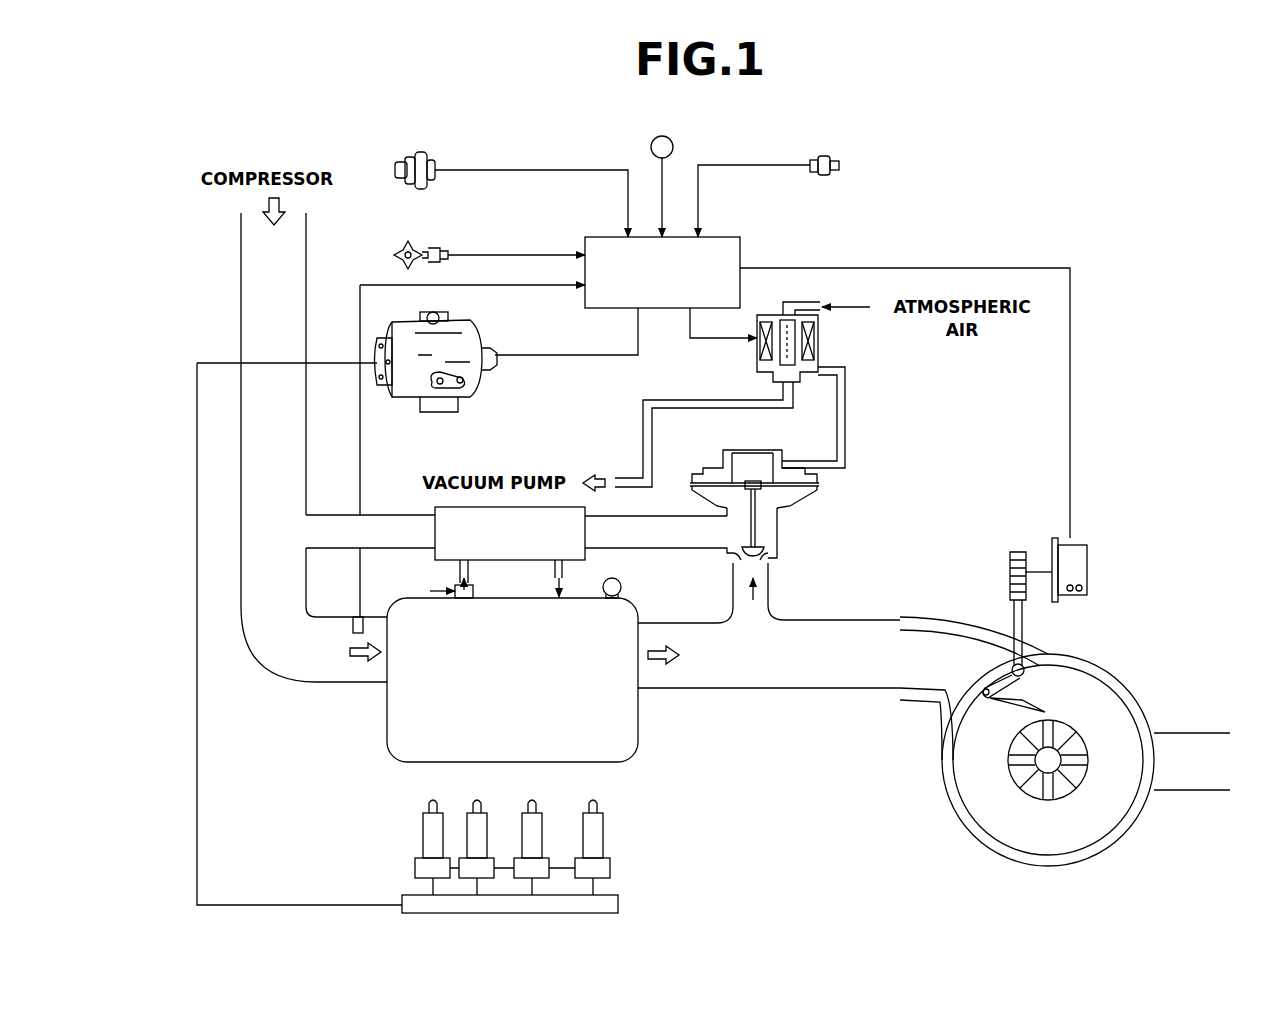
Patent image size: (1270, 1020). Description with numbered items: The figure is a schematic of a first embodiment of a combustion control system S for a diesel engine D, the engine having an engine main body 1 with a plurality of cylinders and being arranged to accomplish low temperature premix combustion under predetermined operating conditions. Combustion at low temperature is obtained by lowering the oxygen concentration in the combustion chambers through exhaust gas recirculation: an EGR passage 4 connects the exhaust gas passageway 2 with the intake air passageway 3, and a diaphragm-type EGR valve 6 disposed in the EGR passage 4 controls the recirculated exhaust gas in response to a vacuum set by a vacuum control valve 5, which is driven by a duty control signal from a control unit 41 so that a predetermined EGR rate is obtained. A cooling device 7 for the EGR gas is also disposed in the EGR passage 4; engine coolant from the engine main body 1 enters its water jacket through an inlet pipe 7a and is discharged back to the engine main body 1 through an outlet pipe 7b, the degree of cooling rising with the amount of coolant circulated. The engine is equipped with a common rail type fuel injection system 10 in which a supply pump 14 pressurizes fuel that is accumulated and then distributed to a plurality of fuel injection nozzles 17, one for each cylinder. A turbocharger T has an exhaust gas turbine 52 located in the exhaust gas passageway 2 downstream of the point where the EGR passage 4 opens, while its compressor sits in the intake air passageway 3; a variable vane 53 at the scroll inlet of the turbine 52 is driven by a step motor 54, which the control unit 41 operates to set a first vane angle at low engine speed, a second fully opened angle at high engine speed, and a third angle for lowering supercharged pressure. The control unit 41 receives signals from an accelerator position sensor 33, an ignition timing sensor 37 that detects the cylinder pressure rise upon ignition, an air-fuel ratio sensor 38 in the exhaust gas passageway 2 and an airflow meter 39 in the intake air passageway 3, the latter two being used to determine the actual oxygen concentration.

The engine main body 1 is at (383, 745).
The exhaust gas passageway 2 is at (822, 690).
The intake air passageway 3 is at (300, 667).
The EGR passage 4 is at (768, 615).
The vacuum control valve 5 is at (820, 345).
The diaphragm-type EGR valve 6 is at (802, 512).
The cooling device 7 is at (435, 508).
The inlet pipe 7a is at (455, 578).
The outlet pipe 7b is at (565, 575).
The fuel injection system 10 is at (645, 888).
The supply pump 14 is at (408, 402).
The fuel injection nozzles 17 is at (600, 818).
The accelerator position sensor 33 is at (652, 138).
The ignition timing sensor 37 is at (623, 585).
The air-fuel ratio sensor 38 is at (818, 153).
The airflow meter 39 is at (430, 150).
The control unit 41 is at (742, 240).
The exhaust gas turbine 52 is at (1143, 690).
The variable vane 53 is at (1030, 700).
The step motor 54 is at (1088, 557).
The combustion control system S is at (993, 232).
The turbocharger T is at (1125, 638).
The diesel engine D is at (712, 748).